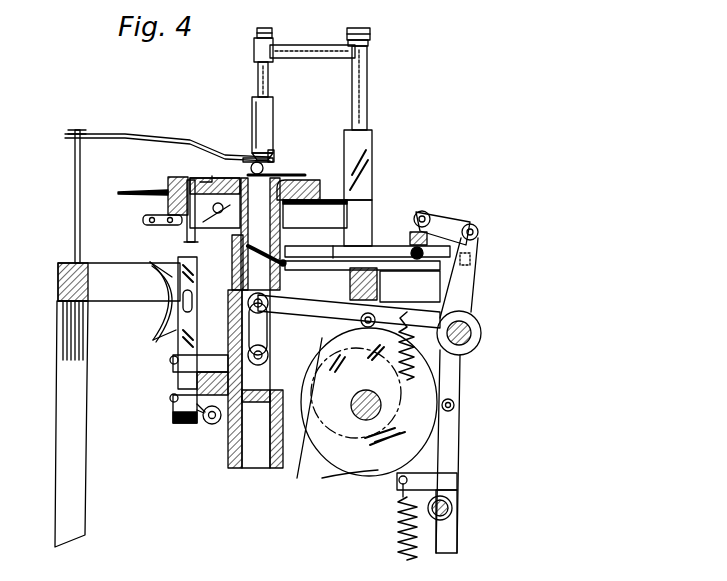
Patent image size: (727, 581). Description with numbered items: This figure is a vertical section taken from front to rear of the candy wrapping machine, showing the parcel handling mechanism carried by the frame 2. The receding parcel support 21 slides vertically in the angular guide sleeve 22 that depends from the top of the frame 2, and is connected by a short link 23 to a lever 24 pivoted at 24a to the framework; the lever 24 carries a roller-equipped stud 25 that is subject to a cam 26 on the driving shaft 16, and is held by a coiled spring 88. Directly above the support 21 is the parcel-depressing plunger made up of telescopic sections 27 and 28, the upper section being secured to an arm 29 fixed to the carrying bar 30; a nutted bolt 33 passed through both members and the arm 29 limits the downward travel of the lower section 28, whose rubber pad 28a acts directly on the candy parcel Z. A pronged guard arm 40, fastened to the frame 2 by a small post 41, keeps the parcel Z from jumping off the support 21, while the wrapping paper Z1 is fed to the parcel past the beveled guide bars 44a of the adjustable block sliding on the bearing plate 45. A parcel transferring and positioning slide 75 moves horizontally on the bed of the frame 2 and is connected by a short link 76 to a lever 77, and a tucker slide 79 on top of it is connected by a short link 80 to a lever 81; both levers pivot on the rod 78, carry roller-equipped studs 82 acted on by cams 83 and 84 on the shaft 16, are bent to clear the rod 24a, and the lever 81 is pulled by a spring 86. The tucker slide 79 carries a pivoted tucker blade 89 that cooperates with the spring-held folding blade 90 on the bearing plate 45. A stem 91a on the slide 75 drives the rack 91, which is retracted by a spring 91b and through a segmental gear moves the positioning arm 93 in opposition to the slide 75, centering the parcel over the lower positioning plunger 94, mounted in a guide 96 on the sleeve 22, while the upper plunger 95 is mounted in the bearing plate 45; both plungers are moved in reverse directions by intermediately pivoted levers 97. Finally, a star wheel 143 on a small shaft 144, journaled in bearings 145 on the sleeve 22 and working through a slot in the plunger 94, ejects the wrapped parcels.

The nutted bolt 33 is at (272, 30).
The arm 29 is at (300, 47).
The upper telescopic plunger section 27 is at (256, 66).
The lower telescopic plunger section 28 is at (258, 100).
The pad 28a is at (258, 150).
The carrying bar 30 is at (366, 78).
The beveled guide bars 44a is at (360, 150).
The candy parcel Z is at (262, 164).
The receding parcel support 21 is at (278, 175).
The wrapping paper Z1 is at (300, 185).
The stem 91a is at (355, 192).
The parcel transferring and positioning slide 75 is at (333, 248).
The tucker slide 79 is at (380, 247).
The short link 80 is at (440, 220).
The short link 76 is at (450, 248).
The lever 77 is at (472, 262).
The guard arm 40 is at (125, 135).
The small post 41 is at (75, 207).
The spring 91b is at (165, 186).
The rack 91 is at (118, 193).
The positioning arm 93 is at (148, 218).
The upper positioning plunger 95 is at (187, 238).
The intermediately pivoted levers 97 is at (196, 182).
The bearing plate 45 is at (232, 220).
The tucker blade 89 is at (267, 247).
The folding blade 90 is at (237, 242).
The angular guide sleeve 22 is at (230, 448).
The frame 2 is at (492, 538).
The star wheel 143 is at (200, 270).
The small shaft 144 is at (183, 296).
The bearings 145 is at (183, 318).
The lower positioning plunger 94 is at (185, 358).
The guide 96 is at (205, 374).
The laterally projecting stud 25 is at (350, 312).
The cam 26 is at (268, 333).
The short link 23 is at (262, 332).
The driving shaft 16 is at (370, 415).
The cam 83 is at (294, 413).
The cam 84 is at (352, 470).
The lever 24 is at (426, 323).
The pivot rod 24a is at (472, 333).
The coiled spring 88 is at (463, 356).
The roller-equipped studs 82 is at (454, 405).
The lever 81 is at (452, 450).
The rod 78 is at (453, 508).
The spring 86 is at (420, 558).